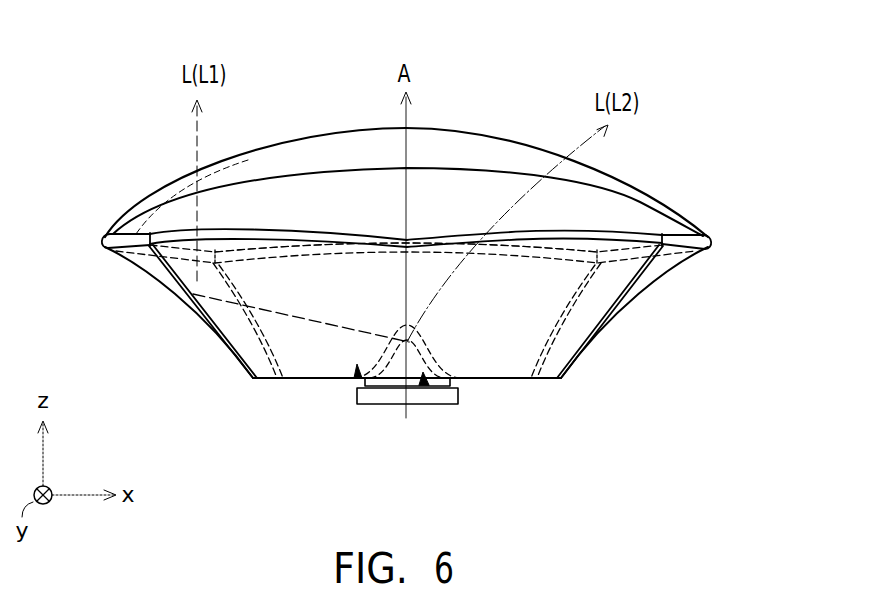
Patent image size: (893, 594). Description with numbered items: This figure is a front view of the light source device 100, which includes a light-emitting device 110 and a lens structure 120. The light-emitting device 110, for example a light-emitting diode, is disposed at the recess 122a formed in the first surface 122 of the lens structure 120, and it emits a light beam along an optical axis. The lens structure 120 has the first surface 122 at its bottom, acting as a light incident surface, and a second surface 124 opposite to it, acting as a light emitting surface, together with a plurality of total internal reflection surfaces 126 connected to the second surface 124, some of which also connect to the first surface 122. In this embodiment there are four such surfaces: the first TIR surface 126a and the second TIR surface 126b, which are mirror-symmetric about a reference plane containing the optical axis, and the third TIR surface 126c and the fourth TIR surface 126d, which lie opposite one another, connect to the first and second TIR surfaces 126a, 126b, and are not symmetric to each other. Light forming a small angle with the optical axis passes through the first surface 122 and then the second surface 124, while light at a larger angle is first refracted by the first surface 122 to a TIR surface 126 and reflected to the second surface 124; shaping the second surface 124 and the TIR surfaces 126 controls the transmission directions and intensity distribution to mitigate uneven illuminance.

The light source device 100 is at (441, 271).
The light-emitting device 110 is at (447, 397).
The lens structure 120 is at (441, 253).
The first surface 122 is at (393, 423).
The recess 122a is at (423, 386).
The second surface 124 is at (505, 186).
The total internal reflection surfaces 126 is at (429, 285).
The first TIR surface 126a is at (650, 270).
The second TIR surface 126b is at (162, 268).
The third TIR surface 126c is at (520, 276).
The fourth TIR surface 126d is at (303, 350).